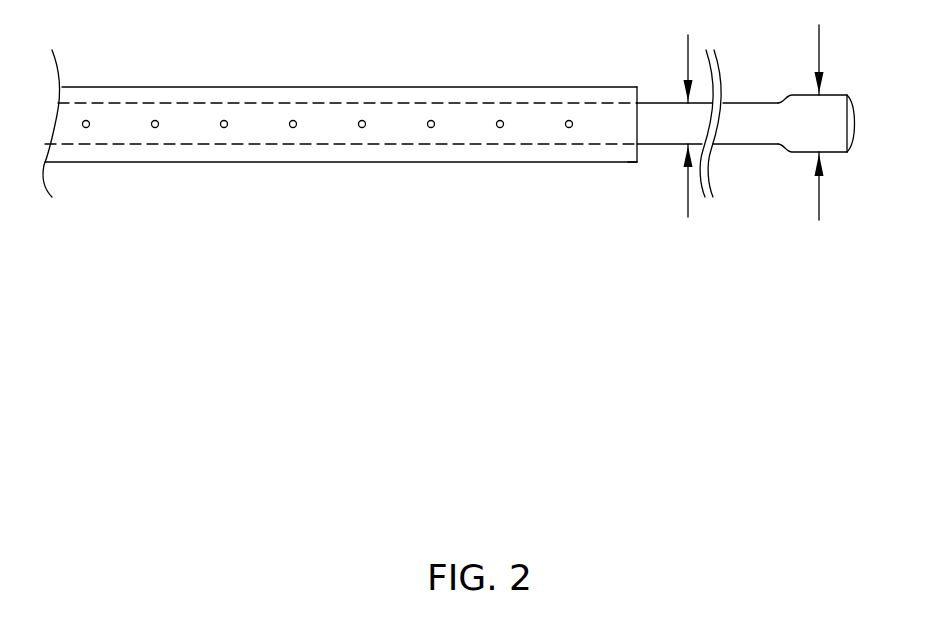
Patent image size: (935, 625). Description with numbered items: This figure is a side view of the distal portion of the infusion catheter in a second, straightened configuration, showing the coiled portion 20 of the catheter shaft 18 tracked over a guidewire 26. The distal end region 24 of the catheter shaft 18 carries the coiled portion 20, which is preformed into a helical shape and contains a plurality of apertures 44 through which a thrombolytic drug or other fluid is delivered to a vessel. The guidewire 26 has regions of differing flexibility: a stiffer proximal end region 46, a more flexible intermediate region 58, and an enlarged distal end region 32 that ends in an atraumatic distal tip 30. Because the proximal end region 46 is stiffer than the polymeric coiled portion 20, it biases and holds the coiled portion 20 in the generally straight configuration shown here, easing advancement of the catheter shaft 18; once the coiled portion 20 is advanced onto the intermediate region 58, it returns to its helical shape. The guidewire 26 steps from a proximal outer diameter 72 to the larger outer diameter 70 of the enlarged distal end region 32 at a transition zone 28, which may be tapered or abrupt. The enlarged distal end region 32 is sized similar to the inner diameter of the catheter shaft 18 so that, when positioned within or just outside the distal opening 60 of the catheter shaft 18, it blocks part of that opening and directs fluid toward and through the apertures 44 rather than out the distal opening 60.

The catheter shaft 18 is at (192, 163).
The coiled portion 20 is at (283, 206).
The distal end region 24 is at (615, 163).
The guidewire 26 is at (471, 145).
The transition zone 28 is at (783, 98).
The atraumatic distal tip 30 is at (853, 103).
The enlarged distal end region 32 is at (838, 153).
The apertures 44 is at (87, 119).
The proximal end region 46 is at (677, 102).
The intermediate region 58 is at (740, 146).
The distal opening 60 is at (640, 163).
The outer diameter 70 is at (819, 135).
The proximal outer diameter 72 is at (689, 192).